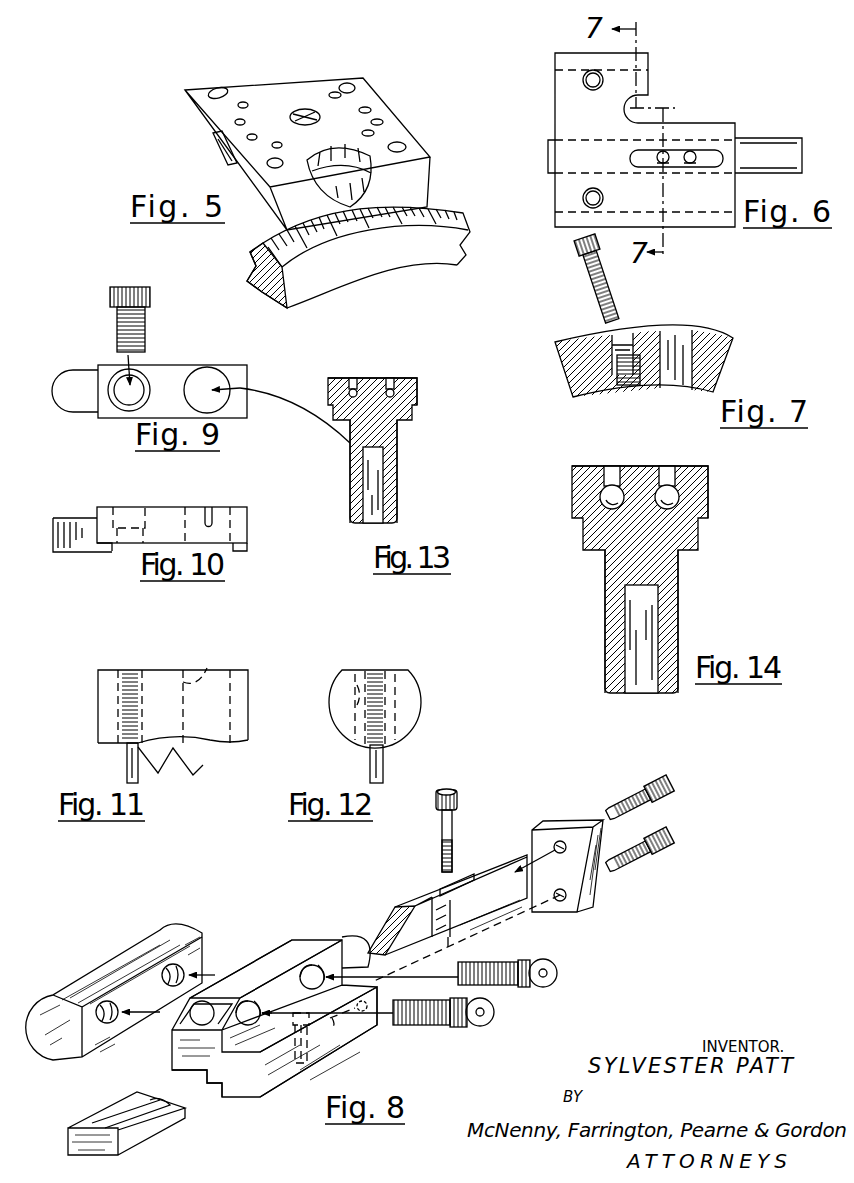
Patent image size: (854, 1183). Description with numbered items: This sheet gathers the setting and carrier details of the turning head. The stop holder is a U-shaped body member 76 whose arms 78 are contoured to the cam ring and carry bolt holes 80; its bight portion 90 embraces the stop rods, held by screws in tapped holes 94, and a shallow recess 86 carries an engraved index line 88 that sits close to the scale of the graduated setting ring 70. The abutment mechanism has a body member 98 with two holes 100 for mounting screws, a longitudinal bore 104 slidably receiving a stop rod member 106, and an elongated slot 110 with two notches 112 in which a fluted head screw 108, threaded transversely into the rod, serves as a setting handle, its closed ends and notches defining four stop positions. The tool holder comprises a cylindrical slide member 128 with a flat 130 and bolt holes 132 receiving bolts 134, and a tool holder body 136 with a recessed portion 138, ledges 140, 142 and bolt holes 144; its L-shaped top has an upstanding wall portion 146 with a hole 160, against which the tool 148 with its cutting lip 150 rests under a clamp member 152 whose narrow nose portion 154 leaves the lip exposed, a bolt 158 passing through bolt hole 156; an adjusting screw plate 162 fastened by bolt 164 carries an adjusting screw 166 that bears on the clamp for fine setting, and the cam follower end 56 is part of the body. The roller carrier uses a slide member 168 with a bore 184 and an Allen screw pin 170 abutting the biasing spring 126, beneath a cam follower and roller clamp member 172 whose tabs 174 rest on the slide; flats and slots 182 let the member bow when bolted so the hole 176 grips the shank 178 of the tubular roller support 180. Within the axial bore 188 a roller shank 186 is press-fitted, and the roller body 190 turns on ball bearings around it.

In FIG. 5, the body member 76 is at (272, 70).
In FIG. 5, the bolt holes 80 is at (210, 90).
In FIG. 5, the holes 94 is at (236, 121).
In FIG. 5, the arms 78 is at (212, 143).
In FIG. 5, the bight portion 90 is at (234, 160).
In FIG. 5, the shallow recess 86 is at (325, 182).
In FIG. 5, the index line 88 is at (356, 175).
In FIG. 5, the graduated setting ring 70 is at (260, 245).
In FIG. 6, the body member 98 is at (552, 98).
In FIG. 7, the body member 98 is at (740, 336).
In FIG. 6, the bore 104 is at (578, 140).
In FIG. 6, the stop rod member 106 is at (757, 138).
In FIG. 7, the stop rod member 106 is at (621, 385).
In FIG. 6, the elongated slot 110 is at (687, 150).
In FIG. 7, the elongated slot 110 is at (625, 333).
In FIG. 6, the notches 112 is at (690, 165).
In FIG. 7, the notches 112 is at (618, 332).
In FIG. 6, the holes 100 is at (599, 192).
In FIG. 7, the fluted head screw 108 is at (597, 290).
In FIG. 9, the bolts 134 is at (108, 296).
In FIG. 8, the bolts 134 is at (530, 1020).
In FIG. 9, the cam follower end 56 is at (82, 378).
In FIG. 10, the cam follower end 56 is at (78, 518).
In FIG. 8, the cam follower end 56 is at (362, 932).
In FIG. 9, the cam follower and roller clamp member 172 is at (95, 420).
In FIG. 10, the cam follower and roller clamp member 172 is at (95, 505).
In FIG. 9, the slots 182 is at (207, 368).
In FIG. 10, the slots 182 is at (208, 512).
In FIG. 9, the hole 176 is at (215, 378).
In FIG. 10, the tabs 174 is at (248, 551).
In FIG. 13, the roller body 190 is at (328, 383).
In FIG. 14, the roller body 190 is at (572, 480).
In FIG. 13, the roller shank 186 is at (375, 378).
In FIG. 14, the roller shank 186 is at (640, 468).
In FIG. 13, the tubular roller support 180 is at (398, 447).
In FIG. 14, the tubular roller support 180 is at (683, 575).
In FIG. 13, the shank 178 is at (396, 492).
In FIG. 14, the shank 178 is at (680, 610).
In FIG. 13, the bore 188 is at (378, 512).
In FIG. 14, the bore 188 is at (655, 640).
In FIG. 11, the bolt holes 132 is at (130, 672).
In FIG. 12, the bolt holes 132 is at (370, 672).
In FIG. 8, the bolt holes 132 is at (172, 963).
In FIG. 11, the bore 184 is at (207, 672).
In FIG. 12, the bore 184 is at (357, 692).
In FIG. 11, the slide member 168 is at (258, 652).
In FIG. 12, the slide member 168 is at (418, 672).
In FIG. 11, the pin 170 is at (127, 768).
In FIG. 12, the pin 170 is at (370, 756).
In FIG. 11, the biasing spring 126 is at (198, 762).
In FIG. 8, the cylindrical slide member 128 is at (187, 920).
In FIG. 8, the flat 130 is at (128, 988).
In FIG. 8, the tool holder body 136 is at (325, 923).
In FIG. 8, the recessed portion 138 is at (244, 975).
In FIG. 8, the ledge 140 is at (310, 945).
In FIG. 8, the bolt holes 144 is at (279, 965).
In FIG. 8, the ledge 142 is at (207, 1085).
In FIG. 8, the upstanding wall portion 146 is at (283, 1083).
In FIG. 8, the hole 160 is at (307, 1052).
In FIG. 8, the tool 148 is at (95, 1103).
In FIG. 8, the cutting lip 150 is at (157, 1118).
In FIG. 8, the clamp member 152 is at (497, 850).
In FIG. 8, the narrow nose portion 154 is at (412, 900).
In FIG. 8, the bolt hole 156 is at (453, 936).
In FIG. 8, the bolt 158 is at (458, 796).
In FIG. 8, the adjusting screw plate 162 is at (605, 888).
In FIG. 8, the bolt 164 is at (660, 832).
In FIG. 8, the adjusting screw 166 is at (663, 788).